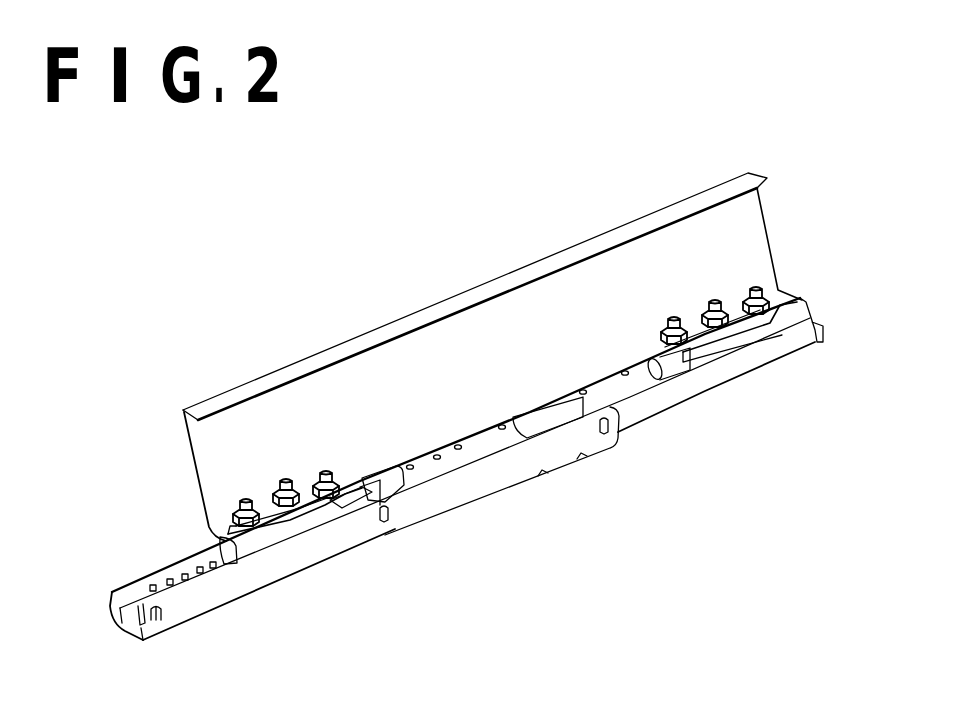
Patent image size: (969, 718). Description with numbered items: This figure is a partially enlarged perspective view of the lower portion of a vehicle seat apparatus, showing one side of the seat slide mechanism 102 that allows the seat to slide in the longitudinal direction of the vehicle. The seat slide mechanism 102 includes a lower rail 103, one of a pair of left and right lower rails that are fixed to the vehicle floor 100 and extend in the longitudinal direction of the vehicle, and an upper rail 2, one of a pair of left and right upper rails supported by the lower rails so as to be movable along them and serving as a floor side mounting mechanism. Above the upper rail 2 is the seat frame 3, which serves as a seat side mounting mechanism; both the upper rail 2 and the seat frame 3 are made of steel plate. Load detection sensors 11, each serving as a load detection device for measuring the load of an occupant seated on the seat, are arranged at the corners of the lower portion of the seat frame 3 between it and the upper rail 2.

The vehicle floor 100 is at (523, 577).
The upper rail 2 is at (783, 350).
The seat frame 3 is at (468, 297).
The load detection sensor 11 is at (742, 284).
The seat slide mechanism 102 is at (177, 523).
The lower rail 103 is at (247, 582).